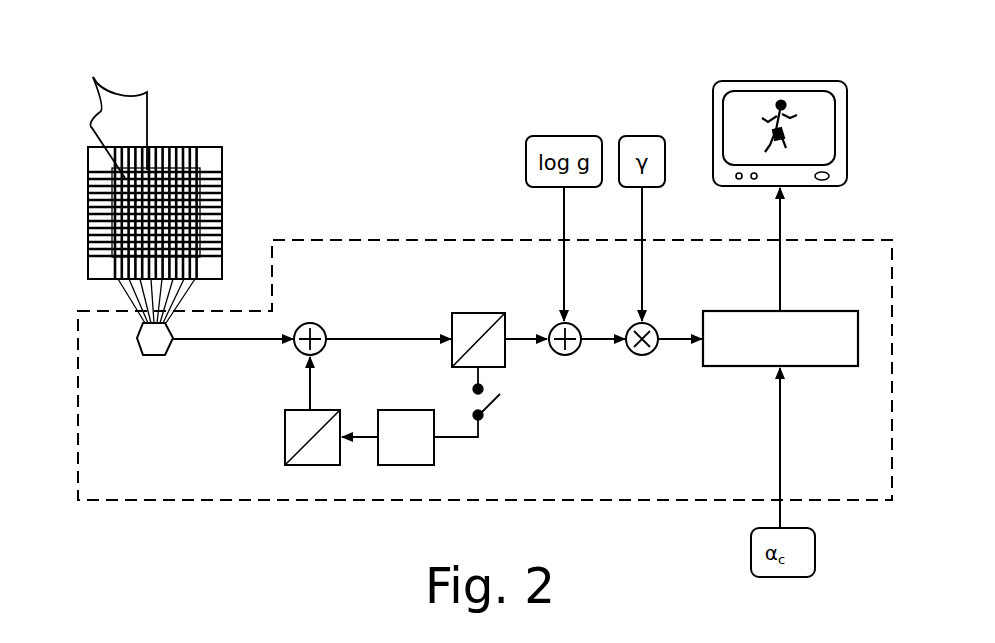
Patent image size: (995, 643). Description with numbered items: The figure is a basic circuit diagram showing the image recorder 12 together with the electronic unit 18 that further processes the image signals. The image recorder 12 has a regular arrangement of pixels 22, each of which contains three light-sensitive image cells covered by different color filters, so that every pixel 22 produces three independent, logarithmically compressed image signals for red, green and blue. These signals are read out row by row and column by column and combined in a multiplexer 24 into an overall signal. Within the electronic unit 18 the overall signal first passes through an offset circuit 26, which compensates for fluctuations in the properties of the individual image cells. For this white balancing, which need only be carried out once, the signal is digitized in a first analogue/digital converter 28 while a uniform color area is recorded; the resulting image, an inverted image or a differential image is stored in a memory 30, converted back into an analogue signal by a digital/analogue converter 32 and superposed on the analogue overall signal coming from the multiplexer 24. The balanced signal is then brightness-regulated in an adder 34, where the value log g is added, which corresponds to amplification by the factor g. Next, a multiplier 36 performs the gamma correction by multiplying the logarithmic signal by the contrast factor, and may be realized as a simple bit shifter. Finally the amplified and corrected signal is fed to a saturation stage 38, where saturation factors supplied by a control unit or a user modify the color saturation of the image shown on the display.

The image recorder 12 is at (210, 128).
The electronic unit 18 is at (340, 240).
The pixels 22 is at (106, 107).
The multiplexer 24 is at (152, 347).
The offset circuit 26 is at (396, 360).
The first analogue/digital converter 28 is at (504, 342).
The memory 30 is at (428, 455).
The digital/analogue converter 32 is at (285, 443).
The adder 34 is at (568, 350).
The multiplier 36 is at (643, 353).
The saturation stage 38 is at (748, 355).